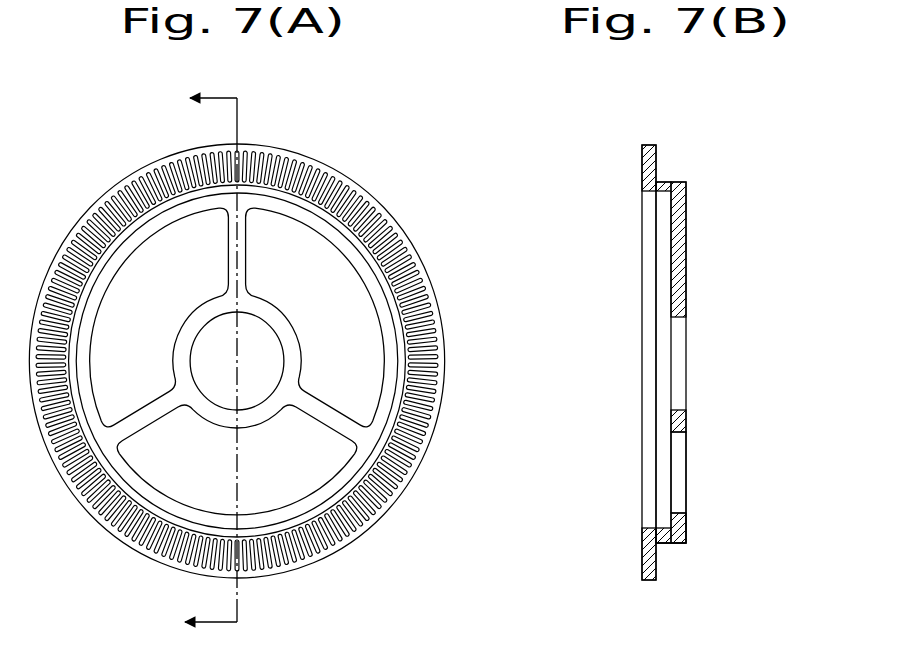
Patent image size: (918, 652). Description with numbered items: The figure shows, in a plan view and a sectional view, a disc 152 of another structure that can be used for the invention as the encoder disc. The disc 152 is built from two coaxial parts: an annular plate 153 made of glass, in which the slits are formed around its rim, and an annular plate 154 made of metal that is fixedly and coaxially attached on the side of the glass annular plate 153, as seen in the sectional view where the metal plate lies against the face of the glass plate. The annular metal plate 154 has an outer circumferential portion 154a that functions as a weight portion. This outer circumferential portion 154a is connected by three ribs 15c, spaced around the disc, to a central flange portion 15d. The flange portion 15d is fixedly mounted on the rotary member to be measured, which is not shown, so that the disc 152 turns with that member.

In FIG. 7A, the disc 152 is at (378, 176).
In FIG. 7B, the disc 152 is at (693, 156).
In FIG. 7A, the annular plate 153 is at (402, 223).
In FIG. 7B, the annular plate 153 is at (638, 163).
In FIG. 7B, the annular plate 154 is at (687, 222).
In FIG. 7B, the outer circumferential portion 154a is at (685, 526).
In FIG. 7A, the ribs 15c is at (249, 250).
In FIG. 7B, the ribs 15c is at (687, 262).
In FIG. 7A, the flange portion 15d is at (284, 326).